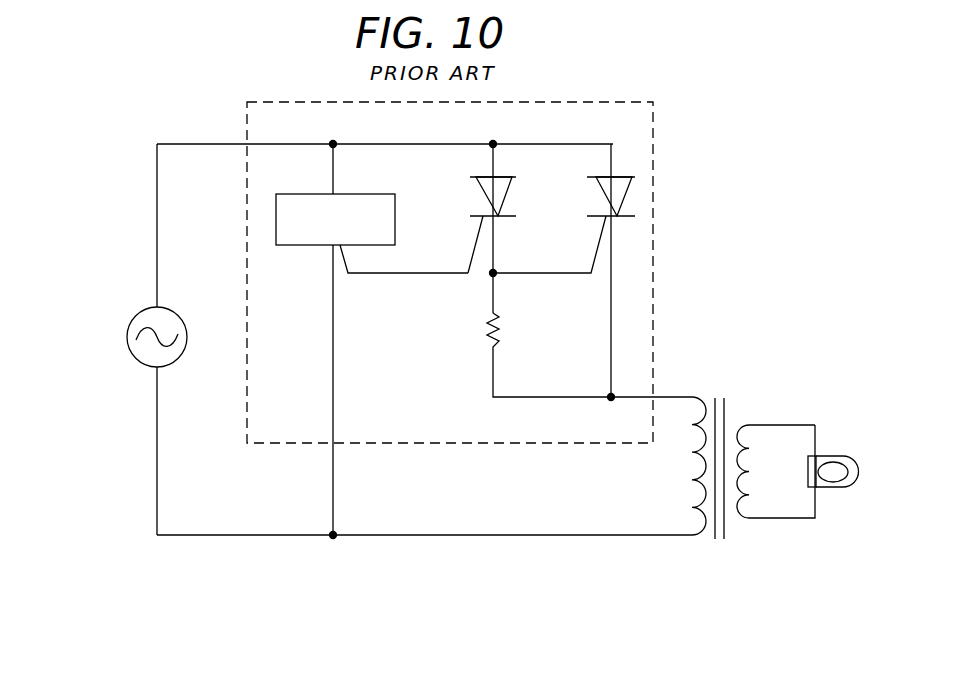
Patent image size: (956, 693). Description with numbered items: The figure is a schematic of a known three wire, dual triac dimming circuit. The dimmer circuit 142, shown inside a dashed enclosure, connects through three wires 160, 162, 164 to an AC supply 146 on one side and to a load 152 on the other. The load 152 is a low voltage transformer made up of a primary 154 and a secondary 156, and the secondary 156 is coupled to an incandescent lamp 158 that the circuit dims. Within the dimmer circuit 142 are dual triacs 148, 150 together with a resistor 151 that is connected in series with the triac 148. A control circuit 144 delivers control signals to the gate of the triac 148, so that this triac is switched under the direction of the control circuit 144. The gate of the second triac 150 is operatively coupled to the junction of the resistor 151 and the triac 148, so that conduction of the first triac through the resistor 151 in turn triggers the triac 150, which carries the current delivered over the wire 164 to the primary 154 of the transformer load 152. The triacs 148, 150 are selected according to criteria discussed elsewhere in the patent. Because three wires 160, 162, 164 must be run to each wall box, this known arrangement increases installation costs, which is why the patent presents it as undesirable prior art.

The three wire dimmer circuit 142 is at (654, 248).
The control circuit 144 is at (320, 246).
The AC supply 146 is at (151, 307).
The triac 148 is at (473, 207).
The triac 150 is at (594, 207).
The resistor 151 is at (488, 339).
The load 152 is at (718, 542).
The primary 154 is at (692, 397).
The secondary 156 is at (749, 425).
The incandescent lamp 158 is at (845, 488).
The wire 160 is at (160, 143).
The wire 162 is at (333, 505).
The wire 164 is at (670, 400).